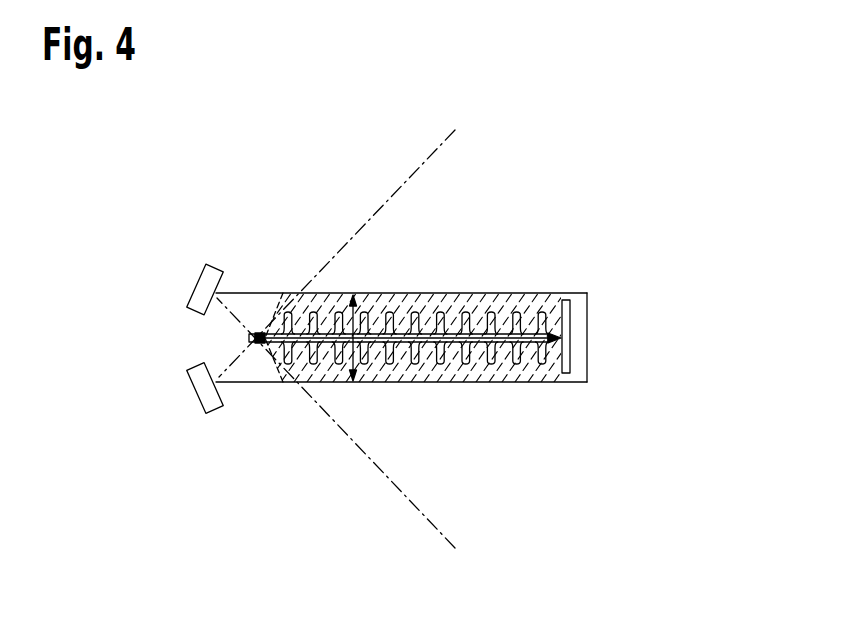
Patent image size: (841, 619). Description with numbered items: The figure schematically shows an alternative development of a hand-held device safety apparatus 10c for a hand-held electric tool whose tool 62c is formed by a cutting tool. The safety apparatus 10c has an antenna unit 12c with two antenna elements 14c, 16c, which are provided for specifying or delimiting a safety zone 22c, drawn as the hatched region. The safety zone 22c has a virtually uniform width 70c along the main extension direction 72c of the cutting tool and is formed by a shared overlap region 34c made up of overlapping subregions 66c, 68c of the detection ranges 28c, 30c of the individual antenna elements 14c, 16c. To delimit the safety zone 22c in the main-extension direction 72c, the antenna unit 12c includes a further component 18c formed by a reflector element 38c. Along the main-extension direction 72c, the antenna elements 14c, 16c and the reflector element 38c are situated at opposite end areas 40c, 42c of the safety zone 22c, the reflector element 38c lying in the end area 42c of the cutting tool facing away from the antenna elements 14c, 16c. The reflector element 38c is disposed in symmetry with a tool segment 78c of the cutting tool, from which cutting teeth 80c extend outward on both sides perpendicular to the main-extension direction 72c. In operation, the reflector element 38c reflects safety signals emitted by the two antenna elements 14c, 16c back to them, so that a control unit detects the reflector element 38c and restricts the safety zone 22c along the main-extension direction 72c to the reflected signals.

The hand-held device safety apparatus 10c is at (231, 234).
The antenna unit 12c is at (232, 437).
The antenna element 14c is at (203, 300).
The antenna element 16c is at (203, 390).
The further component 18c is at (570, 318).
The safety zone 22c is at (506, 387).
The detection range 28c is at (366, 435).
The detection range 30c is at (390, 208).
The shared overlap region 34c is at (504, 290).
The reflector element 38c is at (570, 357).
The end area 40c is at (216, 338).
The end area 42c is at (578, 392).
The tool 62c is at (403, 345).
The subregion 66c is at (421, 294).
The subregion 68c is at (467, 388).
The width 70c is at (355, 313).
The main extension direction 72c is at (462, 305).
The tool segment 78c is at (543, 310).
The cutting teeth 80c is at (548, 365).